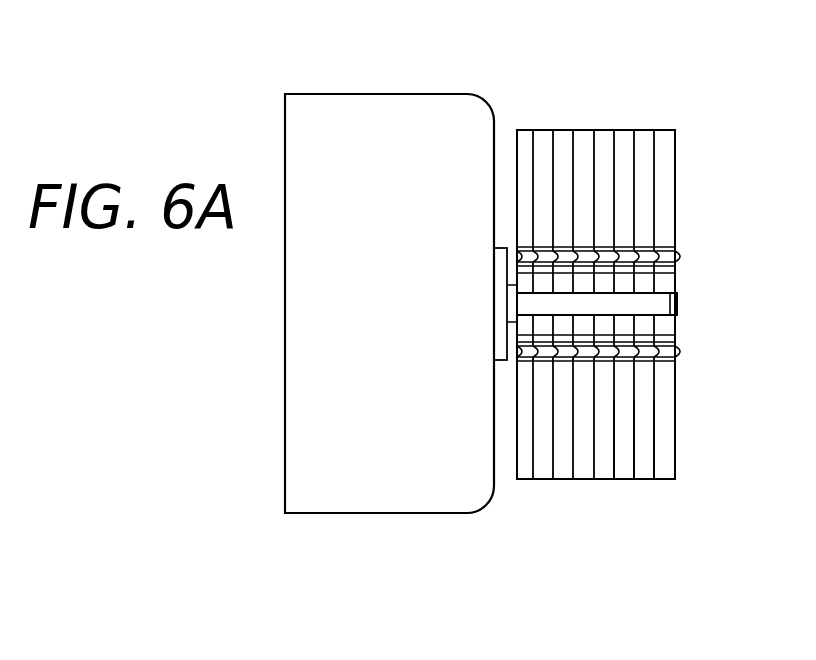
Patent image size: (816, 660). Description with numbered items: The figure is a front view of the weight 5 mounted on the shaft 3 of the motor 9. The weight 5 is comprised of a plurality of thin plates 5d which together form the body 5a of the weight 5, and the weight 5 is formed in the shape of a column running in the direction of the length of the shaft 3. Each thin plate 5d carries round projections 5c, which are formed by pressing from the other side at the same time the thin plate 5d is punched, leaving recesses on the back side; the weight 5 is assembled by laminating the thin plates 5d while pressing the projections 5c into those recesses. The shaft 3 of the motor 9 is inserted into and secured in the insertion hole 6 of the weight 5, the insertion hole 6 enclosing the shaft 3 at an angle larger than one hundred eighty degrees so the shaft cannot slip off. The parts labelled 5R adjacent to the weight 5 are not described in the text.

The motor 9 is at (388, 492).
The weight 5 is at (654, 327).
The connector / lead member 5R is at (517, 258).
The round projections 5c is at (681, 257).
The shaft 3 is at (660, 302).
The insertion hole 6 is at (678, 312).
The thin plates 5d is at (745, 585).
The body 5a is at (639, 497).